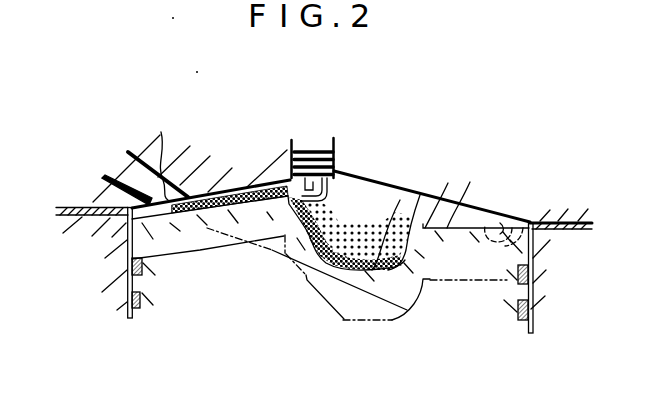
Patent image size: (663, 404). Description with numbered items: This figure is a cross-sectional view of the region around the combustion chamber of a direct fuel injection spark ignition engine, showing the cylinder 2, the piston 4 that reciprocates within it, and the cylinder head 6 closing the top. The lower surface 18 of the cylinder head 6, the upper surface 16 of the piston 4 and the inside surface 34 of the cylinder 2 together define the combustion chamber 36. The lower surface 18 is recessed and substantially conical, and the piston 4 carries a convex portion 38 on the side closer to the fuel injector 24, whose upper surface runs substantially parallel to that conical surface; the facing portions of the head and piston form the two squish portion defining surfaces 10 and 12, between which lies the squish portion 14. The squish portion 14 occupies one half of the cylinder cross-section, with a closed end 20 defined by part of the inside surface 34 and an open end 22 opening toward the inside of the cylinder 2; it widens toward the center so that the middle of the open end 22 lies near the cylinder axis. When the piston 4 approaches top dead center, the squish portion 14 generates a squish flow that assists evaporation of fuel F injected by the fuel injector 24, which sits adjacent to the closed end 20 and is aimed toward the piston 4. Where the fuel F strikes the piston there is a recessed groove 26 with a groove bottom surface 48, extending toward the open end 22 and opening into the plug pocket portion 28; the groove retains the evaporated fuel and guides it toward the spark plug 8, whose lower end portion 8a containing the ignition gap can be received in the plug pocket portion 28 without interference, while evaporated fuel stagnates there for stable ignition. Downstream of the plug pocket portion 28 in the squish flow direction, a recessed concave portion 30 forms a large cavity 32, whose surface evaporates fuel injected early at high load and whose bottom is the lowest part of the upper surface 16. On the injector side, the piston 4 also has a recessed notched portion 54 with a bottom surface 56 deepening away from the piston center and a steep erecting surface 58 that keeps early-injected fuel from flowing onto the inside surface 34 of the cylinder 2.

The cylinder 2 is at (549, 242).
The piston 4 is at (499, 228).
The cylinder head 6 is at (402, 187).
The spark plug 8 is at (312, 146).
The lower end portion of spark plug 8a is at (369, 182).
The squish portion defining surface 10 is at (225, 200).
The squish portion defining surface 12 is at (247, 194).
The squish portion 14 is at (233, 198).
The upper surface of piston 16 is at (483, 228).
The lower surface of cylinder head 18 is at (388, 181).
The closed end of squish portion 20 is at (122, 202).
The open end of squish portion 22 is at (263, 175).
The fuel injector 24 is at (157, 192).
The recessed groove 26 is at (215, 199).
The plug pocket portion 28 is at (312, 208).
The recessed concave portion 30 is at (420, 195).
The cavity 32 is at (465, 228).
The inside surface of cylinder 34 is at (529, 330).
The combustion chamber 36 is at (400, 200).
The convex portion of piston 38 is at (272, 210).
The groove bottom surface 48 is at (243, 210).
The recessed notched portion 54 is at (537, 250).
The bottom surface of notched portion 56 is at (512, 228).
The erecting surface 58 is at (523, 228).
The fuel F is at (167, 215).